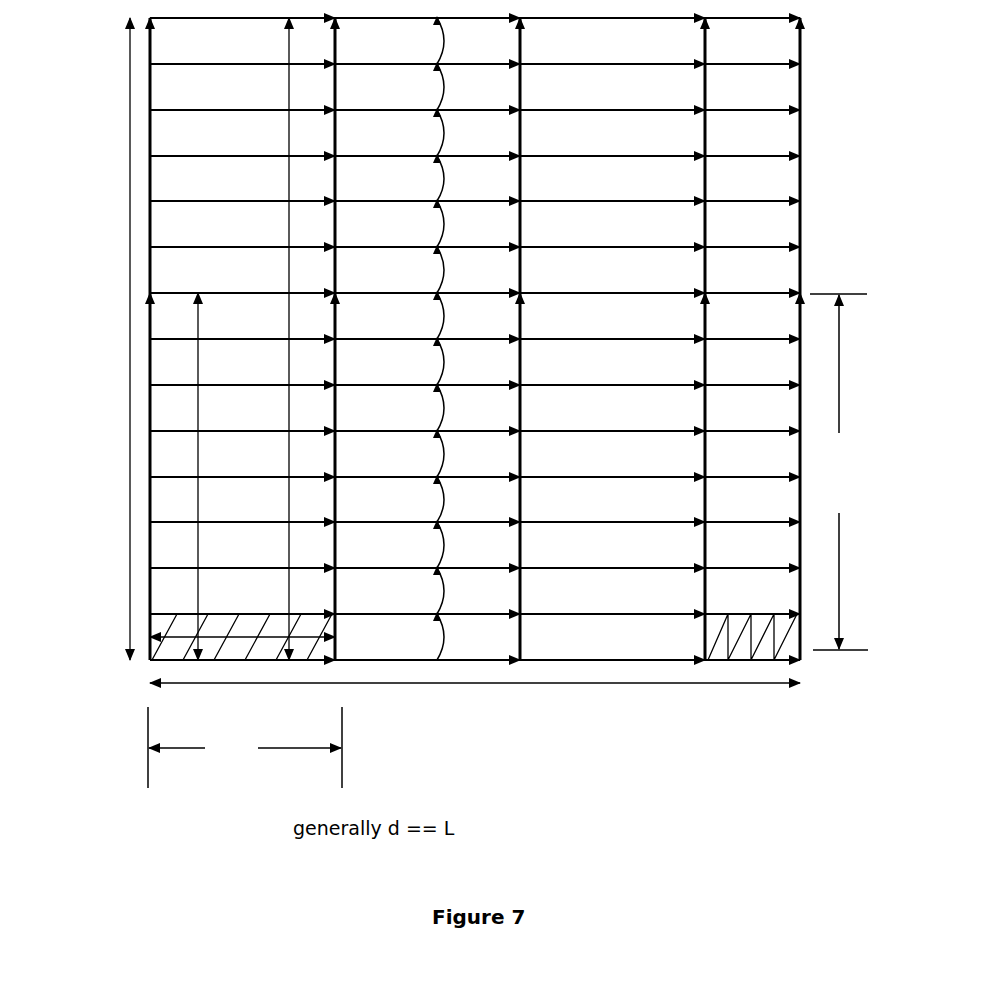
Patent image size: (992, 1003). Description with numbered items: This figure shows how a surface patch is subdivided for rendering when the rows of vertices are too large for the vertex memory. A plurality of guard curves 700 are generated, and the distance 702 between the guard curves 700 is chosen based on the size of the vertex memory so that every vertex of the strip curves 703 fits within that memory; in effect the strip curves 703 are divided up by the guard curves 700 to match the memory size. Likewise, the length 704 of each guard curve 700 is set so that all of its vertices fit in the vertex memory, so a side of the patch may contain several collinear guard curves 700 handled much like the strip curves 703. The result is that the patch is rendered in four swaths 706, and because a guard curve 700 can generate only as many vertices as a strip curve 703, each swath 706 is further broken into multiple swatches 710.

The guard curve 700 is at (150, 517).
The distance between the guard curves 702 is at (233, 790).
The strip curve 703 is at (620, 568).
The length of the guard curves 704 is at (871, 486).
The swath 706 is at (284, 270).
The swatch 710 is at (189, 402).